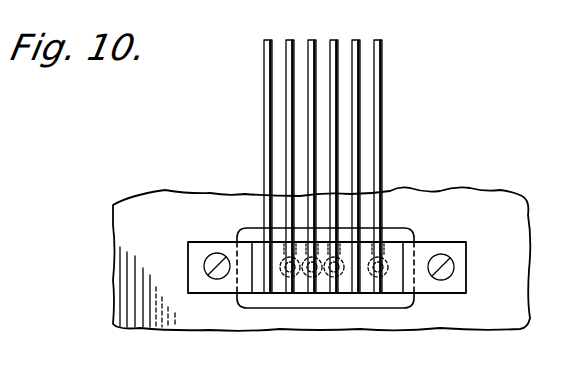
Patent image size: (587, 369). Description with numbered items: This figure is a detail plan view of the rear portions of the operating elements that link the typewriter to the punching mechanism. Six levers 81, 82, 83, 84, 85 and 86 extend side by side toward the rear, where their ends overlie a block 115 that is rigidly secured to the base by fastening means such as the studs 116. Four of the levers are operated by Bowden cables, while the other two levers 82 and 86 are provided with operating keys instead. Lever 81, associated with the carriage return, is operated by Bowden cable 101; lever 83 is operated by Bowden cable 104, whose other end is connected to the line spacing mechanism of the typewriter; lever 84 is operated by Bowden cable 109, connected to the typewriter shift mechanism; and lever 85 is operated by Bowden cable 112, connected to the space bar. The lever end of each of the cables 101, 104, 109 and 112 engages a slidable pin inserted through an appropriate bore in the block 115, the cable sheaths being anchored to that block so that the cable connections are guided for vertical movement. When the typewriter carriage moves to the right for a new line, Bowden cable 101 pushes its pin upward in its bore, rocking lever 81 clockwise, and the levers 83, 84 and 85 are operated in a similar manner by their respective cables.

The lever 81 is at (381, 88).
The lever 82 is at (358, 45).
The lever 83 is at (336, 43).
The lever 84 is at (315, 43).
The lever 85 is at (288, 43).
The lever 86 is at (265, 45).
The Bowden cable 101 is at (383, 276).
The Bowden cable 104 is at (338, 274).
The Bowden cable 109 is at (316, 276).
The Bowden cable 112 is at (283, 274).
The block 115 is at (466, 255).
The studs 116 is at (206, 256).